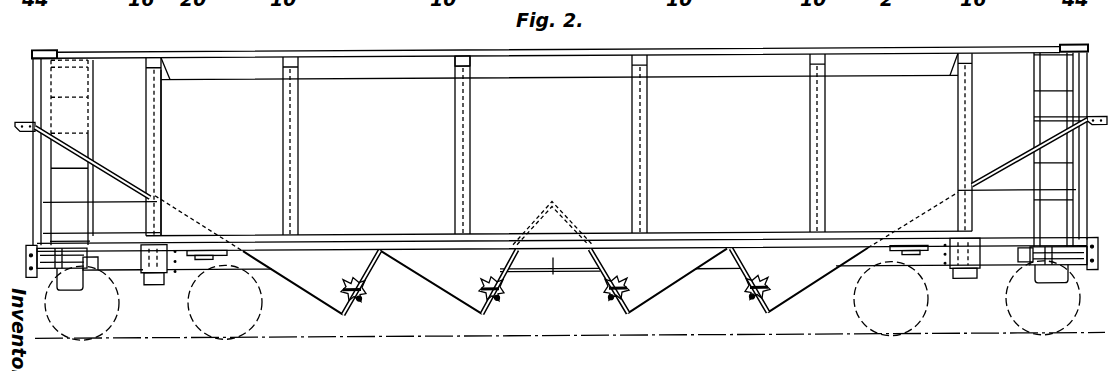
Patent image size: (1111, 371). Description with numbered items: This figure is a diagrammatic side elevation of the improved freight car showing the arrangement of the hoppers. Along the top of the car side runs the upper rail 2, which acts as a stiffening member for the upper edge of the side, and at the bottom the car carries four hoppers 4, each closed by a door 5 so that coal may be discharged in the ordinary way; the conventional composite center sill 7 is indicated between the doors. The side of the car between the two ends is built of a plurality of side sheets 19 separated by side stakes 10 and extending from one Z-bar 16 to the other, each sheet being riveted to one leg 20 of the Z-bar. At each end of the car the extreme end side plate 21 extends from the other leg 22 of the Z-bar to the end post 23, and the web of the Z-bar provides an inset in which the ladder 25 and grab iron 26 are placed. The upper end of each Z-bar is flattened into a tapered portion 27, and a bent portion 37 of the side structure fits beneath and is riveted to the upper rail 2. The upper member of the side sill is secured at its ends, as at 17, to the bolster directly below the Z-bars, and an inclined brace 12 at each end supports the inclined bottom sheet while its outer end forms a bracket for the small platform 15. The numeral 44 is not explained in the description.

The upper rail 2 is at (236, 52).
The hopper 4 is at (320, 278).
The hopper door 5 is at (366, 281).
The composite center sill 7 is at (550, 253).
The side stake 10 is at (283, 176).
The inclined brace 12 is at (124, 176).
The small platform 15 is at (28, 122).
The Z-bar 16 is at (147, 131).
The plate securing side sill to bolster 17 is at (148, 286).
The side sheet 19 is at (559, 155).
The leg of Z-bar 20 is at (161, 160).
The extreme end side plate 21 is at (563, 152).
The other leg of Z-bar 22 is at (152, 160).
The end post 23 is at (47, 77).
The ladder 25 is at (92, 180).
The grab iron 26 is at (1003, 196).
The flattened tapered portion of Z-bar 27 is at (160, 60).
The bent upper end portion 37 is at (457, 60).
The top chord end cap 44 is at (52, 50).